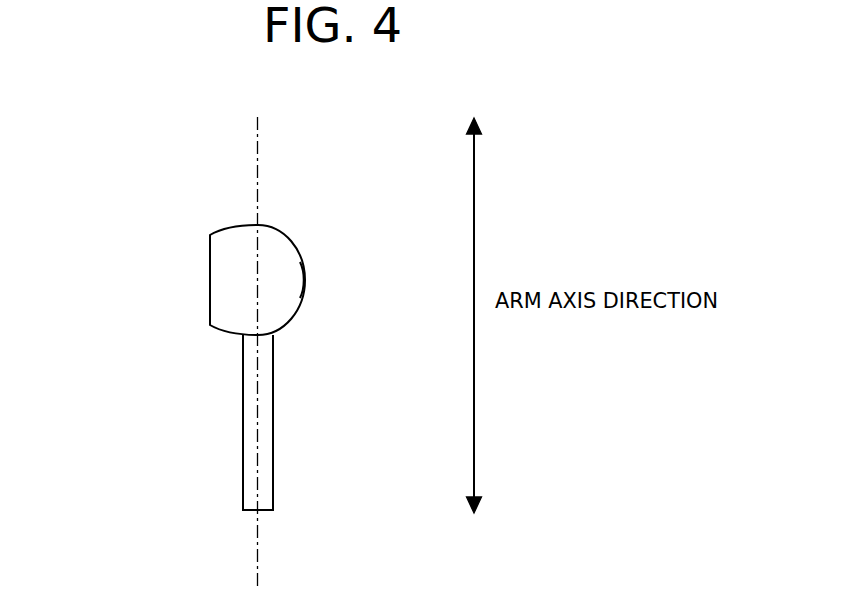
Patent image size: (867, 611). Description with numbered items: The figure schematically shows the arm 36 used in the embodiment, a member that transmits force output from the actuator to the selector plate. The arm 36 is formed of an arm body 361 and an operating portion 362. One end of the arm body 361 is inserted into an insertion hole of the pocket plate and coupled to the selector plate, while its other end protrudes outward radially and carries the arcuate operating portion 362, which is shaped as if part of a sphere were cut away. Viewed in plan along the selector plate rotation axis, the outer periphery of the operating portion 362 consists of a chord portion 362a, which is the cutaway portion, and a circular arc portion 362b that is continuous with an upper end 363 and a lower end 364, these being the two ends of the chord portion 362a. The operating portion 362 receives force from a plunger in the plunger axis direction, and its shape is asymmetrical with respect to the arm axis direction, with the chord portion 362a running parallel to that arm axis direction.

The arm 36 is at (258, 333).
The arm body 361 is at (274, 405).
The operating portion 362 is at (258, 264).
The chord portion 362a is at (204, 280).
The circular arc portion 362b is at (312, 280).
The upper end 363 is at (205, 236).
The lower end 364 is at (204, 327).